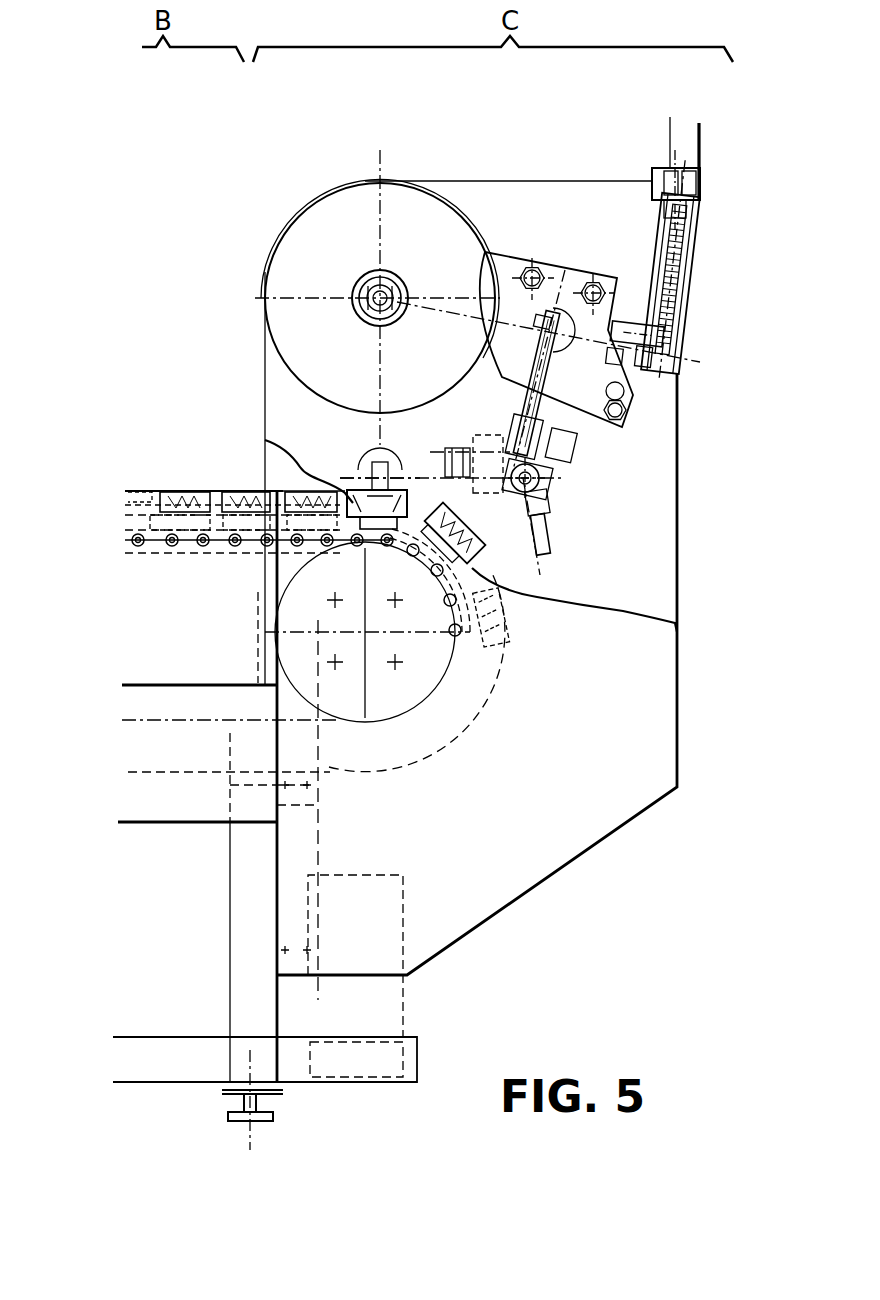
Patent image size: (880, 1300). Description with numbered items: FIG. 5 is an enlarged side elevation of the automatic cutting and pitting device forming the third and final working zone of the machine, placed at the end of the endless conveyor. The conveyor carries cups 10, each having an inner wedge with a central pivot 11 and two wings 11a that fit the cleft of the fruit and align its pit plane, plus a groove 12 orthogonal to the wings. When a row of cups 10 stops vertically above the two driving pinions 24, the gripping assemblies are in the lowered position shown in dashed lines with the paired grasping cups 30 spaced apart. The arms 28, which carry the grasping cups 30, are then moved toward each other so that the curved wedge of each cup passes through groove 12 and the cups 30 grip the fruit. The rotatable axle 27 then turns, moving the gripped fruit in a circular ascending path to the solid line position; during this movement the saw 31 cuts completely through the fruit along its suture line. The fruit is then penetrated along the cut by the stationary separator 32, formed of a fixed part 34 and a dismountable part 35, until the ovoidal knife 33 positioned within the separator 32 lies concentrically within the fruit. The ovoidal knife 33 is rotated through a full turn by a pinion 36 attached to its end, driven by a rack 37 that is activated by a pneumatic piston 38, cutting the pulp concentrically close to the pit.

The cup 10 is at (333, 507).
The central pivot 11 is at (190, 492).
The wing 11a is at (166, 492).
The groove 12 is at (373, 498).
The driving pinion 24 is at (405, 690).
The rotatable axle 27 is at (557, 523).
The arm 28 is at (418, 480).
The grasping cup 30 is at (365, 466).
The saw 31 is at (320, 230).
The stationary separator 32 is at (547, 205).
The ovoidal knife 33 is at (577, 333).
The fixed part 34 is at (568, 283).
The dismountable part 35 is at (578, 392).
The pinion 36 is at (660, 353).
The rack 37 is at (672, 262).
The pneumatic piston 38 is at (687, 148).